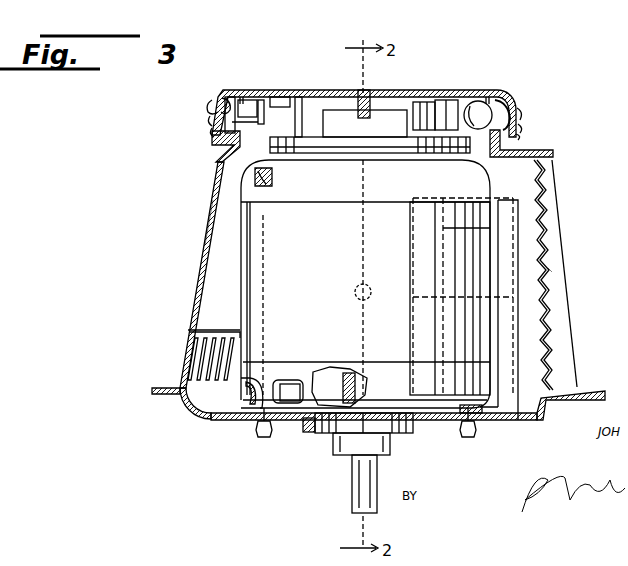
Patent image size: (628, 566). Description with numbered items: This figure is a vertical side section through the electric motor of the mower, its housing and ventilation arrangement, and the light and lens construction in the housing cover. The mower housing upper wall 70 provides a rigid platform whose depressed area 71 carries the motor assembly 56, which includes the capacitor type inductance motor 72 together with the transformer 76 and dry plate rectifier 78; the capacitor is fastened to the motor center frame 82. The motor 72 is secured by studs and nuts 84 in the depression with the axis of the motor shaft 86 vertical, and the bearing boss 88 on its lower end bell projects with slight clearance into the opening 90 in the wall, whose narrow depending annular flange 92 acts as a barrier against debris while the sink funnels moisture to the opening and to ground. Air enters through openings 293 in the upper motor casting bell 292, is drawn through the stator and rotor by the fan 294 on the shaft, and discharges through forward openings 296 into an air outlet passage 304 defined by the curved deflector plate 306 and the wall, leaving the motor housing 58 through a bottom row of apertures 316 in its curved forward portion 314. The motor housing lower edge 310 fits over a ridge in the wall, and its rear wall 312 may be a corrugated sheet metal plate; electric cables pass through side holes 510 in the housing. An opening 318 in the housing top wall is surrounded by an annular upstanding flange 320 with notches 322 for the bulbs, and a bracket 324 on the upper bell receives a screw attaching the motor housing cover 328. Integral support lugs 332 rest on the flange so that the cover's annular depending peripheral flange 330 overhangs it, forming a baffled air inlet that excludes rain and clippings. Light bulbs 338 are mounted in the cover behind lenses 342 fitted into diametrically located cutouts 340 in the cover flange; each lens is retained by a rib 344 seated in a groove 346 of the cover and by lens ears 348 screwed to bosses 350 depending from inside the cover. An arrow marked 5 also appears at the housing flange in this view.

The housing flange 5 is at (599, 393).
The motor assembly 56 is at (547, 189).
The motor housing 58 is at (215, 248).
The upper wall 70 is at (156, 390).
The depressed area 71 is at (198, 421).
The motor 72 is at (440, 402).
The transformer 76 is at (508, 362).
The dry plate rectifier 78 is at (535, 237).
The motor center frame 82 is at (362, 223).
The studs and nuts 84 is at (261, 437).
The motor shaft 86 is at (354, 482).
The bearing boss 88 is at (398, 437).
The opening 90 is at (318, 434).
The annular flange 92 is at (303, 432).
The upper motor casting bell 292 is at (330, 185).
The openings 293 is at (265, 186).
The fan 294 is at (335, 384).
The forward openings 296 is at (283, 380).
The air outlet passage 304 is at (232, 338).
The curved deflector plate 306 is at (198, 335).
The motor housing lower edge 310 is at (184, 395).
The rear wall 312 is at (548, 270).
The forward portion 314 is at (205, 218).
The apertures 316 is at (195, 362).
The opening 318 is at (215, 158).
The annular upstanding flange 320 is at (248, 97).
The notches 322 is at (214, 118).
The bracket 324 is at (392, 110).
The motor housing cover 328 is at (438, 103).
The annular depending peripheral flange 330 is at (320, 111).
The support lugs 332 is at (297, 98).
The light bulbs 338 is at (480, 100).
The cutouts 340 is at (216, 99).
The lenses 342 is at (219, 130).
The rib 344 is at (230, 92).
The groove 346 is at (505, 108).
The lens ears 348 is at (351, 140).
The bosses 350 is at (245, 92).
The side holes 510 is at (367, 284).